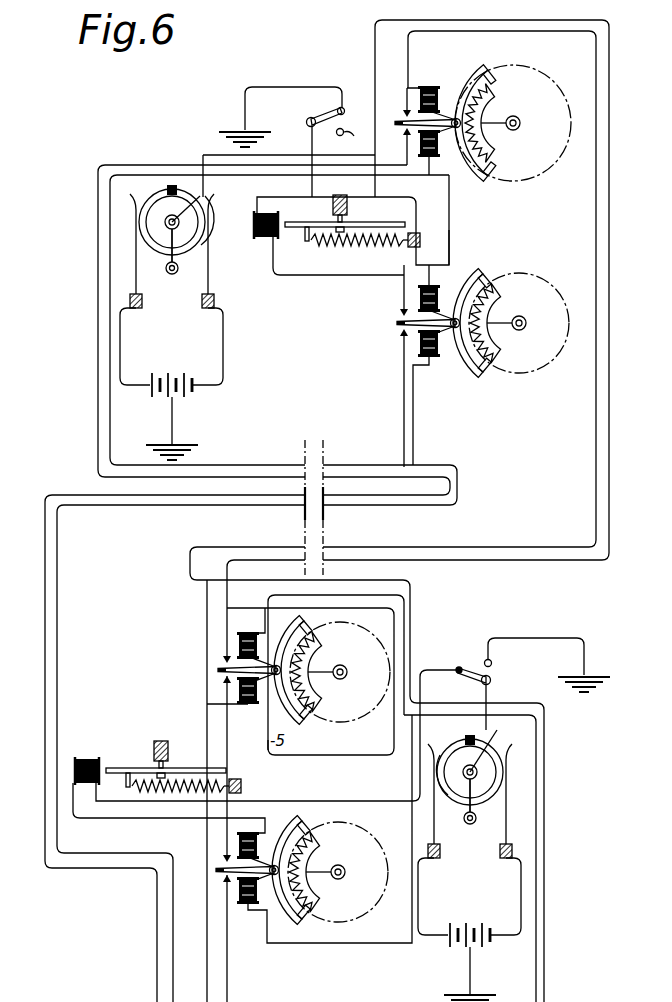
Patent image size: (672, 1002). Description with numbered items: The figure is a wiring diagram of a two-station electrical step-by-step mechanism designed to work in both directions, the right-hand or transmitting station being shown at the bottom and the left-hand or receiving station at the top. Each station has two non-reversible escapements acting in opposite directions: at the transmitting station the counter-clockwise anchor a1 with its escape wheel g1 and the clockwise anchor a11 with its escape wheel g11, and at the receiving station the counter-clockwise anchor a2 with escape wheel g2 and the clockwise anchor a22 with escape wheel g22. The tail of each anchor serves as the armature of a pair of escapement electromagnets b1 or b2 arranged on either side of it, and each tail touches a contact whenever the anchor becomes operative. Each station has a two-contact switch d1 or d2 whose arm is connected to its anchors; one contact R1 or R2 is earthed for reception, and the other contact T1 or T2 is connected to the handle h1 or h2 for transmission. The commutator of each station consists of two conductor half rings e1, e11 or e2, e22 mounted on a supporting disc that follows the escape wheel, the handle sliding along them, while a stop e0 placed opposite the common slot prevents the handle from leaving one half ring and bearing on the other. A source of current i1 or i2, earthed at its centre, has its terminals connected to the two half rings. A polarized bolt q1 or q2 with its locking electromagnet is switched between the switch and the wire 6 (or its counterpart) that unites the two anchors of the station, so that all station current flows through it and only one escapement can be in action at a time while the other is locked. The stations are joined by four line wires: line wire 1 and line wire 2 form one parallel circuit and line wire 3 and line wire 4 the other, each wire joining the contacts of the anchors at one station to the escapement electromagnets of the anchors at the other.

The line wire 1 is at (272, 560).
The line wire 2 is at (270, 553).
The line wire 3 is at (383, 505).
The line wire 4 is at (398, 492).
The wire 6 is at (454, 247).
The receiving contact R2 is at (342, 105).
The two-contact switch d2 is at (308, 119).
The transmitting contact T2 is at (348, 135).
The stop e0 is at (170, 186).
The conductor half ring e2 is at (150, 210).
The conductor half ring e22 is at (205, 212).
The handle h2 is at (172, 275).
The source of current i2 is at (176, 380).
The polarized bolt q2 is at (284, 226).
The electromagnets b2 is at (430, 84).
The anchor a2 is at (486, 82).
The escape wheel g2 is at (492, 172).
The anchor a22 is at (472, 372).
The escape wheel g22 is at (500, 372).
The electromagnets b1 is at (237, 646).
The anchor a1 is at (296, 722).
The escape wheel g1 is at (317, 652).
The anchor a11 is at (300, 815).
The escape wheel g11 is at (320, 860).
The polarized bolt q1 is at (92, 757).
The receiving contact R1 is at (492, 660).
The two-contact switch d1 is at (465, 666).
The transmitting contact T1 is at (492, 680).
The conductor half ring e1 is at (495, 760).
The conductor half ring e11 is at (452, 752).
The handle h1 is at (470, 822).
The source of current i1 is at (468, 932).